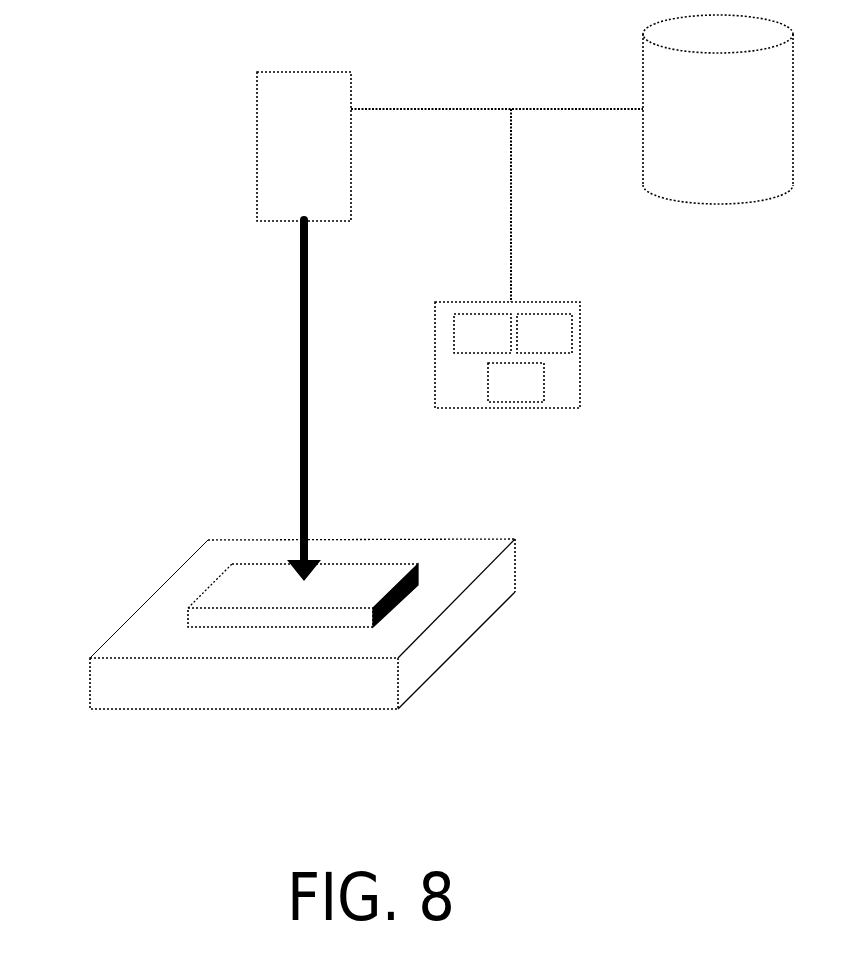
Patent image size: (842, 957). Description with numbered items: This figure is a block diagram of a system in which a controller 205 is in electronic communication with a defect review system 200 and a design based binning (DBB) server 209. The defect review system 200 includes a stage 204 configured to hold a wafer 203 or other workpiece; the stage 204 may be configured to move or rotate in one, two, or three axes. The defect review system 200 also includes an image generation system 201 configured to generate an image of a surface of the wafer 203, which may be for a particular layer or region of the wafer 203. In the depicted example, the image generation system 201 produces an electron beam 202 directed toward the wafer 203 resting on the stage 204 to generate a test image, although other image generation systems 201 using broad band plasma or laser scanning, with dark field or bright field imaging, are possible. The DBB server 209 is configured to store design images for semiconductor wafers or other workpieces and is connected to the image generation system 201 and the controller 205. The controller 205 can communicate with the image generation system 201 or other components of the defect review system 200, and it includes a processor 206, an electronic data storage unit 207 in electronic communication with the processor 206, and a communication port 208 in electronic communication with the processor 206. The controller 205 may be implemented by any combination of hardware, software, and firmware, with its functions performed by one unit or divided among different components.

The defect review system 200 is at (198, 106).
The image generation system 201 is at (304, 146).
The electron beam 202 is at (309, 281).
The wafer 203 is at (229, 588).
The stage 204 is at (158, 704).
The controller 205 is at (538, 312).
The processor 206 is at (482, 333).
The electronic data storage unit 207 is at (544, 333).
The communication port 208 is at (516, 382).
The design based binning (DBB) server 209 is at (718, 109).